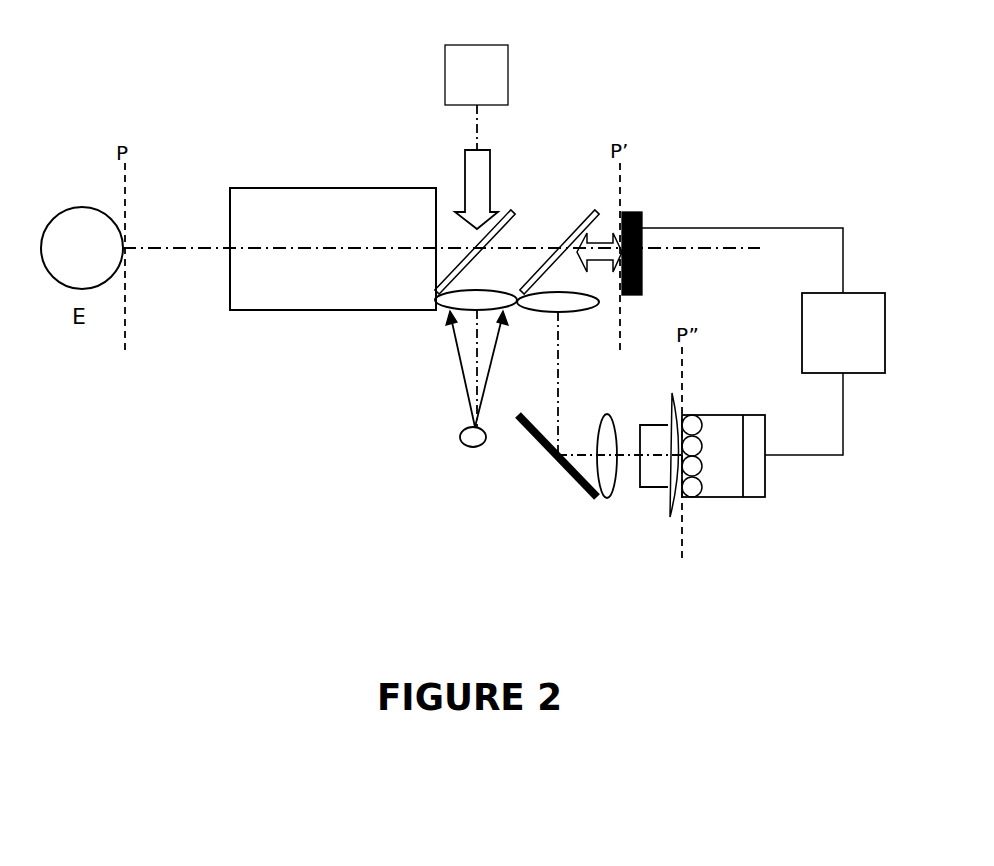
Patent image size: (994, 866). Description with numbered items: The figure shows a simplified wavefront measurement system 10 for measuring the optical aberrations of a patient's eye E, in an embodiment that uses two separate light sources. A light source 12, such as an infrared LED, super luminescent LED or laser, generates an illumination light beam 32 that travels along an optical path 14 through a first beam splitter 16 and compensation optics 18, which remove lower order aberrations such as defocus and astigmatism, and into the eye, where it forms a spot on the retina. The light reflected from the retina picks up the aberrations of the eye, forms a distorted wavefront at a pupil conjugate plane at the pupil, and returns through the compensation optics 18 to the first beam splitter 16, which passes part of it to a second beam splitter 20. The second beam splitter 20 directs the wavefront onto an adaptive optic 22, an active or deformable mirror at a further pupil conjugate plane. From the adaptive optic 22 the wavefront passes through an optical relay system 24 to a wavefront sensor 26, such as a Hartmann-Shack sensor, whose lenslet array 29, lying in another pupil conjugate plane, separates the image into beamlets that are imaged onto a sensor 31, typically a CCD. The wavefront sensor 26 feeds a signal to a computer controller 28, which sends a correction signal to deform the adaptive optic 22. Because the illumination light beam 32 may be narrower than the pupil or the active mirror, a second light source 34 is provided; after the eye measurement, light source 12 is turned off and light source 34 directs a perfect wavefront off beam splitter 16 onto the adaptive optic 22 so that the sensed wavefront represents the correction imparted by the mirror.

The wavefront measurement system 10 is at (765, 103).
The light source 12 is at (476, 97).
The optical path 14 is at (147, 248).
The first beam splitter 16 is at (517, 210).
The compensation optics 18 is at (308, 188).
The second beam splitter 20 is at (597, 215).
The adaptive optic 22 is at (642, 212).
The optical relay system 24 is at (530, 502).
The wavefront sensor 26 is at (750, 493).
The computer controller 28 is at (763, 341).
The lenslet array 29 is at (690, 415).
The sensor 31 is at (767, 498).
The illumination light beam 32 is at (460, 162).
The second light source 34 is at (463, 444).